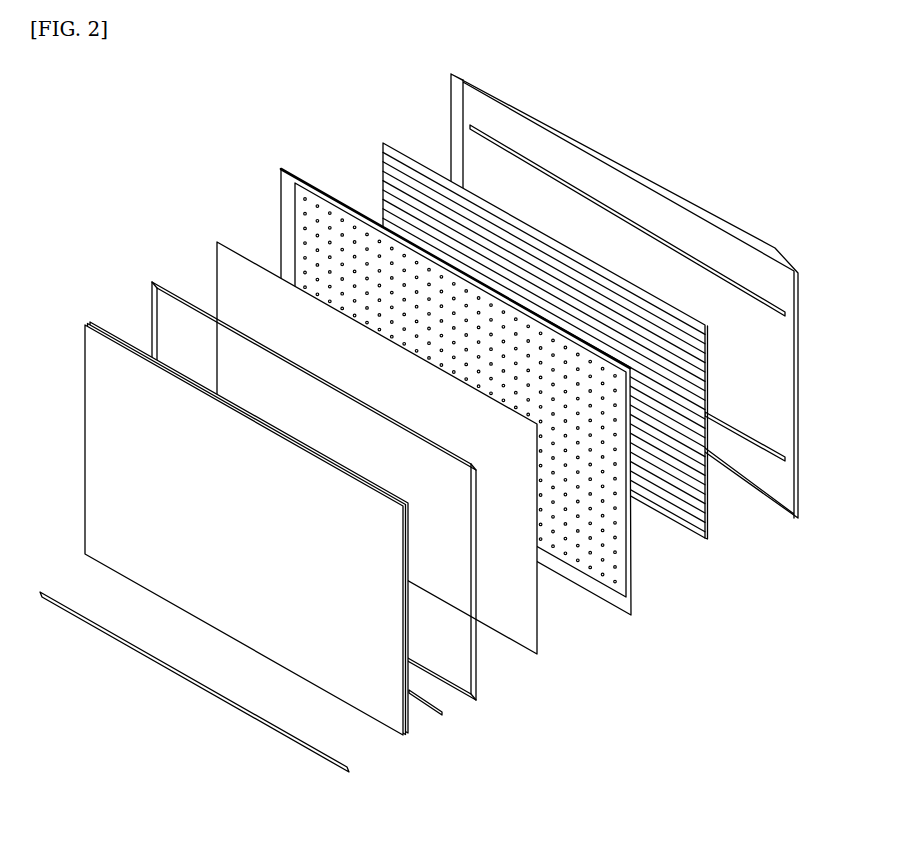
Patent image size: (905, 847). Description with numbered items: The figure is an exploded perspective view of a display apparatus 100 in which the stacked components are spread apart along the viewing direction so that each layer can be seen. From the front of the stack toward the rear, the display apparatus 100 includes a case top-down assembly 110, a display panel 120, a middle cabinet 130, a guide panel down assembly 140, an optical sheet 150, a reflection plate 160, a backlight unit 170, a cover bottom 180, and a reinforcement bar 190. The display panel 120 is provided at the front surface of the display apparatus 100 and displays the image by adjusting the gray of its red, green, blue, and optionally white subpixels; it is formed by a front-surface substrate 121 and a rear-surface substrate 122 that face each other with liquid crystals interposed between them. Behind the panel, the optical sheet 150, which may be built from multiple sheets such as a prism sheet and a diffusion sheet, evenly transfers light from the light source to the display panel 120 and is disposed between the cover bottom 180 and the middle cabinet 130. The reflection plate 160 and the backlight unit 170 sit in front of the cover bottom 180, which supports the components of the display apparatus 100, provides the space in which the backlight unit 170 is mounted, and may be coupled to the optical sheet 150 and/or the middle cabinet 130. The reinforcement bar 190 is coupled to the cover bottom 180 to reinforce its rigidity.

The display apparatus 100 is at (98, 116).
The case top-down assembly 110 is at (347, 769).
The display panel 120 is at (280, 570).
The front-surface substrate 121 is at (406, 740).
The rear-surface substrate 122 is at (409, 736).
The middle cabinet 130 is at (474, 697).
The guide panel down assembly 140 is at (443, 713).
The optical sheet 150 is at (538, 653).
The reflection plate 160 is at (632, 617).
The backlight unit 170 is at (708, 539).
The cover bottom 180 is at (799, 519).
The reinforcement bar 190 is at (795, 307).